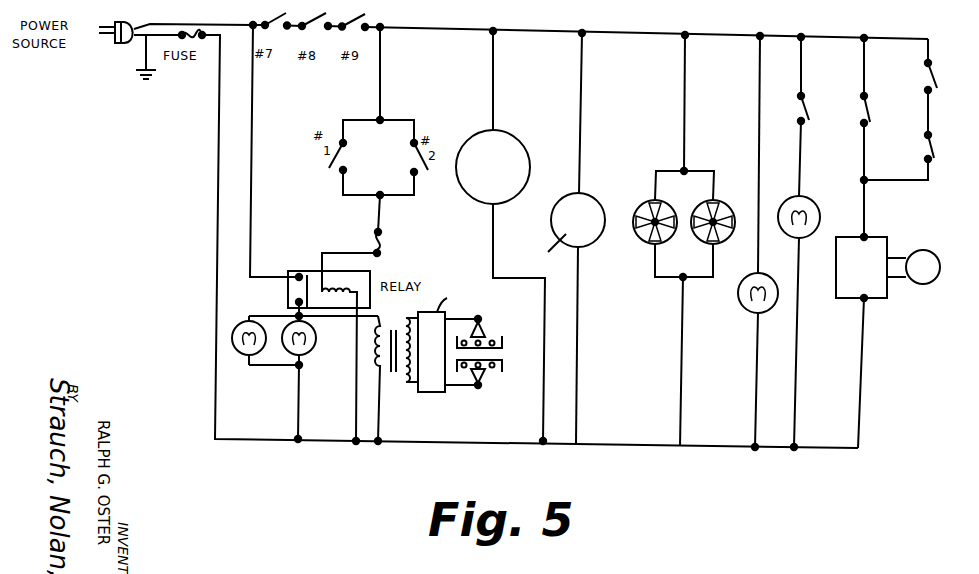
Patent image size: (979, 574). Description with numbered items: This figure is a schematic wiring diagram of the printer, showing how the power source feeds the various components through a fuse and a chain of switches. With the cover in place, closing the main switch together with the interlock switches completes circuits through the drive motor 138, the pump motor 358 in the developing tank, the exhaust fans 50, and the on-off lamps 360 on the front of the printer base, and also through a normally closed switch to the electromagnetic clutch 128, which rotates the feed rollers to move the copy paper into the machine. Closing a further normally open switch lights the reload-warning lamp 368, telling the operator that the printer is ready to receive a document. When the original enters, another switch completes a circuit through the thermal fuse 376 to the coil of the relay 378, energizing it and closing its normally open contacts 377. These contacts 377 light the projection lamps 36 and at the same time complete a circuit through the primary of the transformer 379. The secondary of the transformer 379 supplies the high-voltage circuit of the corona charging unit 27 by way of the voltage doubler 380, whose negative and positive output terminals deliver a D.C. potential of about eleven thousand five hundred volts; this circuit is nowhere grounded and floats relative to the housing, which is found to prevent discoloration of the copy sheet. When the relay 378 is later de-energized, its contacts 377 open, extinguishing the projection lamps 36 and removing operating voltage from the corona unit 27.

The drive motor 138 is at (517, 146).
The pump motor 358 is at (594, 241).
The exhaust fans 50 is at (642, 193).
The on-off lamps 360 is at (740, 288).
The reload-warning lamp 368 is at (820, 221).
The electromagnetic clutch 128 is at (920, 275).
The thermal fuse 376 is at (375, 238).
The relay 378 is at (335, 285).
The relay contacts 377 is at (305, 291).
The transformer 379 is at (391, 332).
The voltage doubler 380 is at (427, 393).
The corona charging unit 27 is at (509, 347).
The projection lamps 36 is at (305, 377).